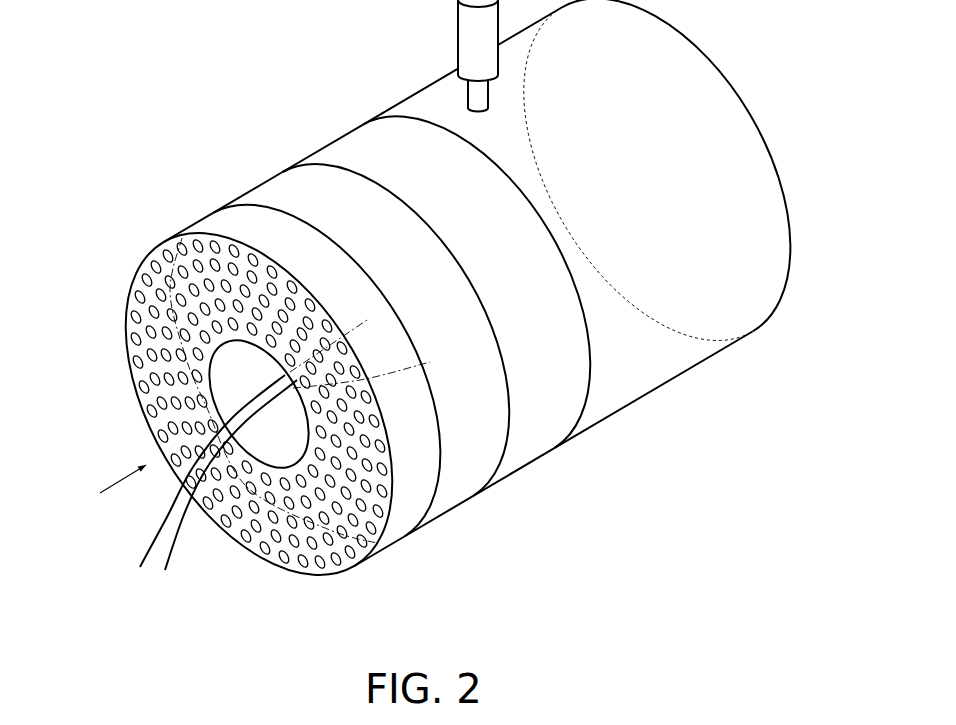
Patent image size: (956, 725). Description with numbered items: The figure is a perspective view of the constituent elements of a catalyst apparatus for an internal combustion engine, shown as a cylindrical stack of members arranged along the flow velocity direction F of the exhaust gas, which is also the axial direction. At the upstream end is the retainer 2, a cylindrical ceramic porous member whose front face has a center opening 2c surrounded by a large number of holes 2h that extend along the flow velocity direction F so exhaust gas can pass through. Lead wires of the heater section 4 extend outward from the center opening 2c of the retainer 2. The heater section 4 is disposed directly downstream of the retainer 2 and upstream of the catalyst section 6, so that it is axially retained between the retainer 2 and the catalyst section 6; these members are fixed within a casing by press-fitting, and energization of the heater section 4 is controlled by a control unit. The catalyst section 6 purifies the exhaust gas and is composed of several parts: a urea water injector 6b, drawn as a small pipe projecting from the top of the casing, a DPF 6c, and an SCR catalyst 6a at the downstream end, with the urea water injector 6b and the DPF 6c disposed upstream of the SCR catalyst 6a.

The retainer 2 is at (393, 519).
The center opening 2c is at (275, 435).
The holes 2h is at (139, 267).
The flow velocity direction F is at (123, 473).
The heater section 4 is at (453, 482).
The catalyst section 6 is at (537, 271).
The DPF 6c is at (537, 417).
The SCR catalyst 6a is at (627, 388).
The urea water injector 6b is at (473, 33).